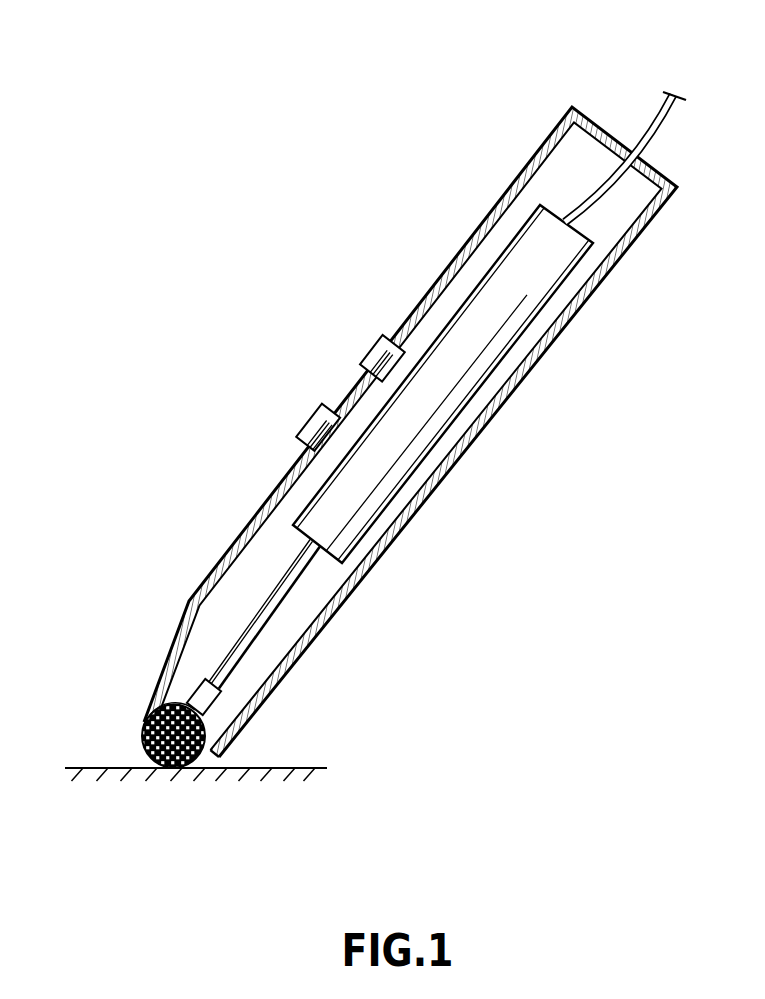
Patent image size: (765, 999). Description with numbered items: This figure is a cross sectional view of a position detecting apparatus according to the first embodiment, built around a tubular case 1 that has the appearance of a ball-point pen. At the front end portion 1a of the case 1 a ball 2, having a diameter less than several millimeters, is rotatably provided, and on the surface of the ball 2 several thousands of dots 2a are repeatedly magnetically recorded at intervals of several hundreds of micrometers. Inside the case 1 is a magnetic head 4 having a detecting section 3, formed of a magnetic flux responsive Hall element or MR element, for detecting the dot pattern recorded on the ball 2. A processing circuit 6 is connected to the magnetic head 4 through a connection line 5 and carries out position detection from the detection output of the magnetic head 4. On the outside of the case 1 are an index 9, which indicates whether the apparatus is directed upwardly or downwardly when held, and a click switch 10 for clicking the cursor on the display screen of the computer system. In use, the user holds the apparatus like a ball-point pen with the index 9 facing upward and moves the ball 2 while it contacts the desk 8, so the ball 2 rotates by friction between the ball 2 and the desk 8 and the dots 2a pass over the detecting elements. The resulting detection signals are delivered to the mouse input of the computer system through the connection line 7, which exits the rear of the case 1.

The tubular case 1 is at (467, 248).
The front end portion 1a is at (227, 754).
The ball 2 is at (143, 733).
The dots 2a is at (160, 770).
The detecting section 3 is at (185, 703).
The magnetic head 4 is at (200, 680).
The connection line 5 is at (302, 578).
The processing circuit 6 is at (455, 393).
The connection line 7 is at (663, 100).
The desk 8 is at (305, 768).
The index 9 is at (376, 338).
The click switch 10 is at (310, 418).